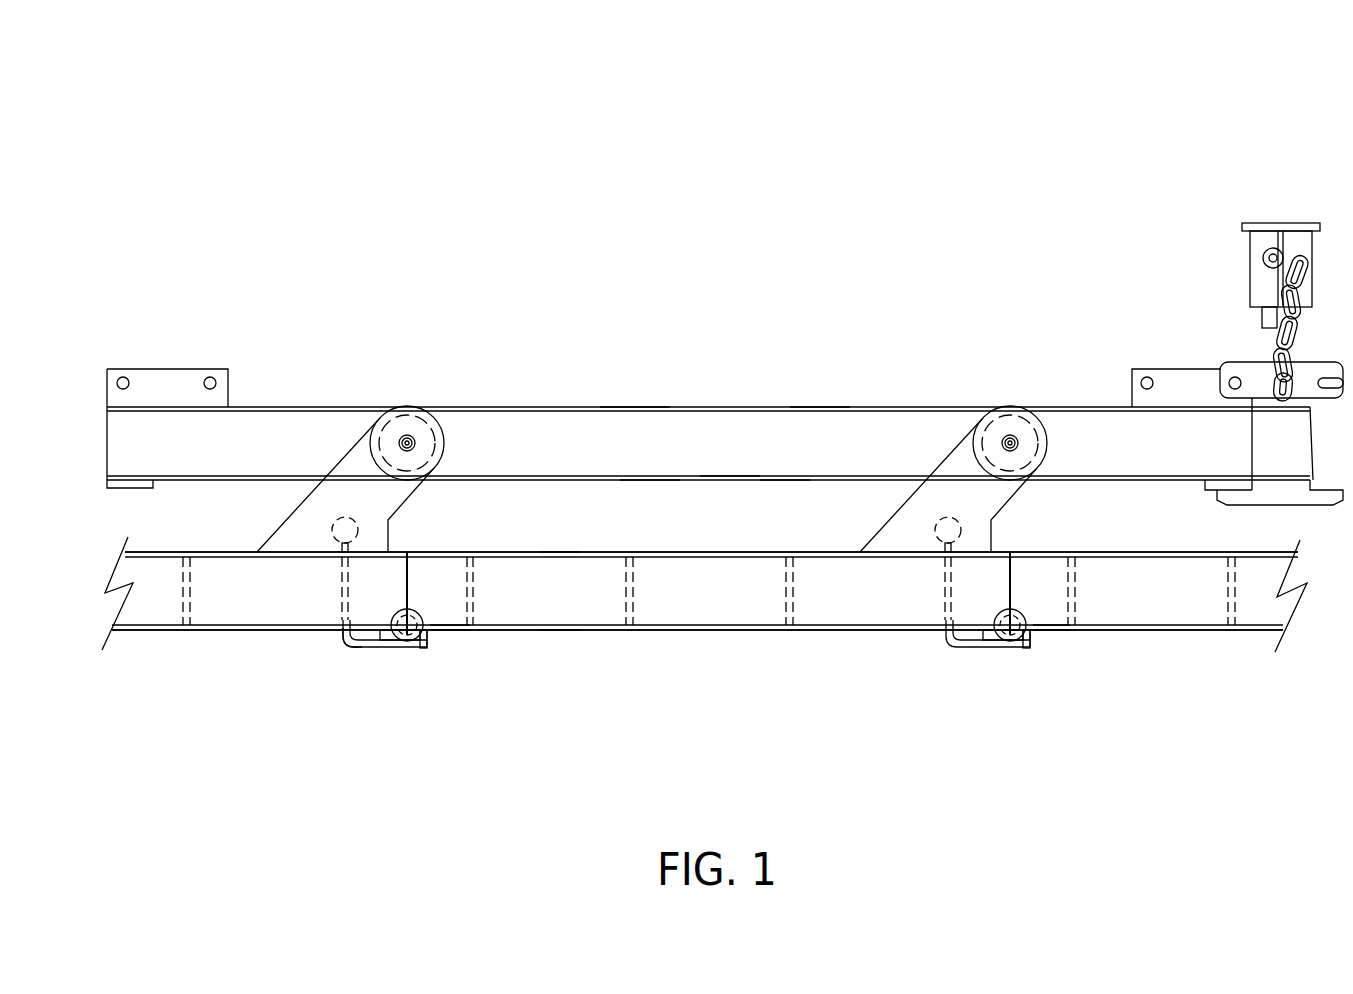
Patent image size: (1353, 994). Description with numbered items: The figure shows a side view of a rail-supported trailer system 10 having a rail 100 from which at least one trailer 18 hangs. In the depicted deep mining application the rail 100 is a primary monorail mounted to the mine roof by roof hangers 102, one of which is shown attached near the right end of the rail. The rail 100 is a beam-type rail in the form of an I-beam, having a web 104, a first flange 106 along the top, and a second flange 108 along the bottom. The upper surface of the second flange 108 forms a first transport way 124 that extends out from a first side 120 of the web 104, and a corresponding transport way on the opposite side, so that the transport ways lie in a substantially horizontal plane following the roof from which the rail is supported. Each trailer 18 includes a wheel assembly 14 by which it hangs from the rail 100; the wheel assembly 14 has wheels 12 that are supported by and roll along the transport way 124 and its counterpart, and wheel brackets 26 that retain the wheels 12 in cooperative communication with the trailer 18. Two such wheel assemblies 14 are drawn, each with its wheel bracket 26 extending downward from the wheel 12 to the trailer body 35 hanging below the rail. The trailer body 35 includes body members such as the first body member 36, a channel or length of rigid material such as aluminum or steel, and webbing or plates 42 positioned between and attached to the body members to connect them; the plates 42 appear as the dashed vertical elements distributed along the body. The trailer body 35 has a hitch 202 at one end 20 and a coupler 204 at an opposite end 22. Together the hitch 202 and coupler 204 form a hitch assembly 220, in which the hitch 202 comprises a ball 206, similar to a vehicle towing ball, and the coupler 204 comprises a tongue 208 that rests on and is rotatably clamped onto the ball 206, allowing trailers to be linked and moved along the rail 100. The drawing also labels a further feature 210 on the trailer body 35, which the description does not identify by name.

The rail-supported trailer system 10 is at (1192, 137).
The wheels 12 is at (430, 432).
The wheel assembly 14 is at (414, 430).
The trailer 18 is at (250, 607).
The one end 20 is at (394, 565).
The opposite end 22 is at (438, 608).
The wheel bracket 26 is at (283, 520).
The trailer body 35 is at (150, 607).
The first body member 36 is at (207, 607).
The webbing or plates 42 is at (628, 615).
The rail 100 is at (732, 425).
The roof hangers 102 is at (1262, 236).
The web 104 is at (636, 425).
The first flange 106 is at (823, 407).
The second flange 108 is at (785, 478).
The first side 120 is at (727, 458).
The first transport way 124 is at (668, 473).
The hitch 202 is at (373, 645).
The coupler 204 is at (428, 646).
The ball 206 is at (404, 642).
The tongue 208 is at (415, 612).
The rail fastener 210 is at (560, 554).
The hitch assembly 220 is at (344, 640).